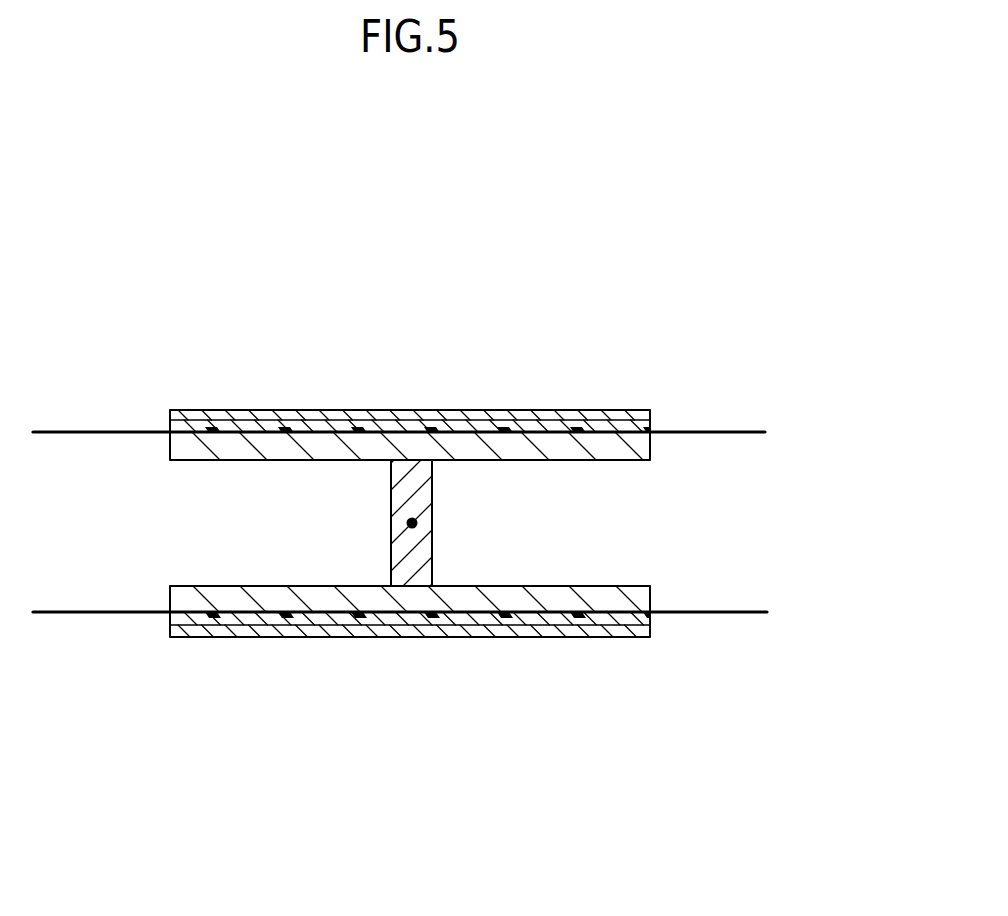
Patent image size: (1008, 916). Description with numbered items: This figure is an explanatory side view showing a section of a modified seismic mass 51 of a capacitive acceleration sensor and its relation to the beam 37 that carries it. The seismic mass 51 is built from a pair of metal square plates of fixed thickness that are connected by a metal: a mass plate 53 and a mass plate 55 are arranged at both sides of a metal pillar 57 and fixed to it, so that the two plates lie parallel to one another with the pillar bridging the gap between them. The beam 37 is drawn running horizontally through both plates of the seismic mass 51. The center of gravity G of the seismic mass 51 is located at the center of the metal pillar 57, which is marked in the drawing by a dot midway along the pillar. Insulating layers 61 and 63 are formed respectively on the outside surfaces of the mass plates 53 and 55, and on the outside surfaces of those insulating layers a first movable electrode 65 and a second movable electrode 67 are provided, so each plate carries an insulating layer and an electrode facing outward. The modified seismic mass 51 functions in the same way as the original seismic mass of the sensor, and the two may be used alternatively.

The beam 37 is at (80, 431).
The seismic mass 51 is at (534, 535).
The mass plate 53 is at (490, 394).
The mass plate 55 is at (490, 669).
The metal pillar 57 is at (412, 523).
The insulating layer 61 is at (655, 427).
The insulating layer 63 is at (652, 620).
The first movable electrode 65 is at (627, 427).
The second movable electrode 67 is at (636, 635).
The center of gravity G is at (410, 523).